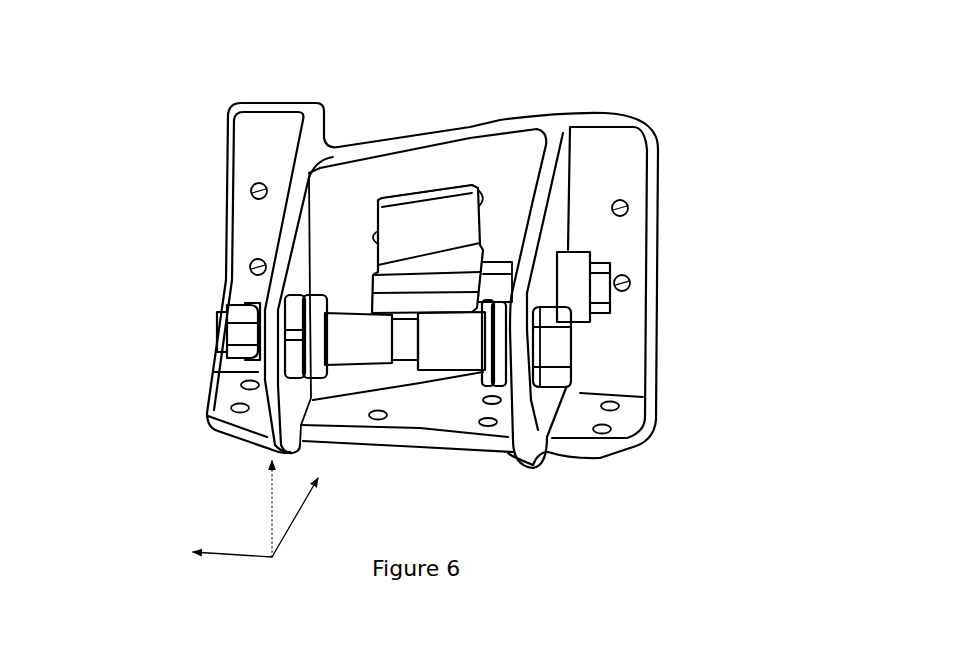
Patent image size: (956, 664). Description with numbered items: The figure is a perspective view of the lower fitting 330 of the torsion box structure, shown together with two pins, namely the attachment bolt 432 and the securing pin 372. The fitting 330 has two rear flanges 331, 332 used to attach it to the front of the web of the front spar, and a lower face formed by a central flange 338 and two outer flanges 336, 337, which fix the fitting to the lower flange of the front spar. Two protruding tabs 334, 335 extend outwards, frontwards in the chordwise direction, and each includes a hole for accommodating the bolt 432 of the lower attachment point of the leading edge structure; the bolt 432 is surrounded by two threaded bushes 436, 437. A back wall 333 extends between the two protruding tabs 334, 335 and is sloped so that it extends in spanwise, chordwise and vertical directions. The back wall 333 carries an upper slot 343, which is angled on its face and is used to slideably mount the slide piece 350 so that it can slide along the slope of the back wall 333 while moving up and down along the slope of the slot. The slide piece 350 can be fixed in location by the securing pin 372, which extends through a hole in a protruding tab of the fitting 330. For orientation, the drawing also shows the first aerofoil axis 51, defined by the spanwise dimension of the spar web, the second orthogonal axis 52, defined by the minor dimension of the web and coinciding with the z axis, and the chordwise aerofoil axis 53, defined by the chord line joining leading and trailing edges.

The lower fitting 330 is at (628, 80).
The rear flange 331 is at (268, 128).
The rear flange 332 is at (607, 155).
The back wall 333 is at (430, 135).
The protruding tab 334 is at (283, 237).
The protruding tab 335 is at (540, 202).
The outer flange 336 is at (625, 420).
The outer flange 337 is at (207, 392).
The central flange 338 is at (428, 408).
The upper slot 343 is at (481, 188).
The slide piece 350 is at (365, 205).
The securing pin 372 is at (614, 261).
The attachment bolt 432 is at (583, 346).
The threaded bush 436 is at (358, 338).
The threaded bush 437 is at (433, 353).
The first aerofoil axis 51 is at (223, 558).
The second orthogonal axis 52 is at (270, 493).
The chordwise aerofoil axis 53 is at (300, 528).